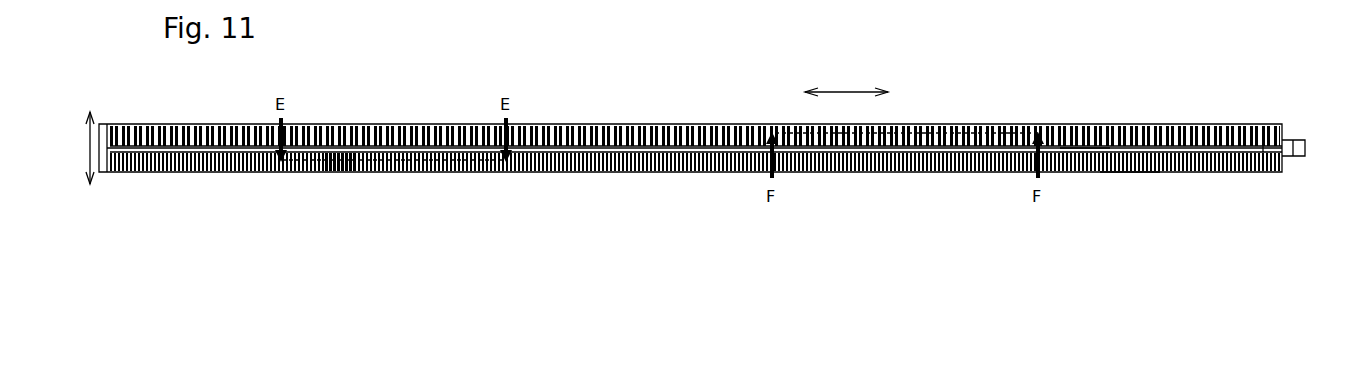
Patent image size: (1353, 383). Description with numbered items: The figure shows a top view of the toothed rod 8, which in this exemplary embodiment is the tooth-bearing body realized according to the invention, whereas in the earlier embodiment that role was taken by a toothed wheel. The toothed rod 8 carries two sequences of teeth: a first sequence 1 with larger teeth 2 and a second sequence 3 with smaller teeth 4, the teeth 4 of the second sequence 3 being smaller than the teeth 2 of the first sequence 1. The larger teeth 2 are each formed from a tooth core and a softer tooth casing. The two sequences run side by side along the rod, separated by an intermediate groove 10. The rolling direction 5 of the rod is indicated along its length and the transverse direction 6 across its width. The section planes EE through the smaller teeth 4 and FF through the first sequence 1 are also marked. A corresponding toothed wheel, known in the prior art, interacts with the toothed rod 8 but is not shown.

The first sequence 1 is at (1288, 131).
The teeth 2 is at (649, 124).
The second sequence 3 is at (1288, 167).
The teeth 4 is at (350, 172).
The rolling direction 5 is at (850, 92).
The transverse direction 6 is at (87, 150).
The toothed rod 8 is at (1127, 180).
The intermediate groove 10 is at (1083, 148).